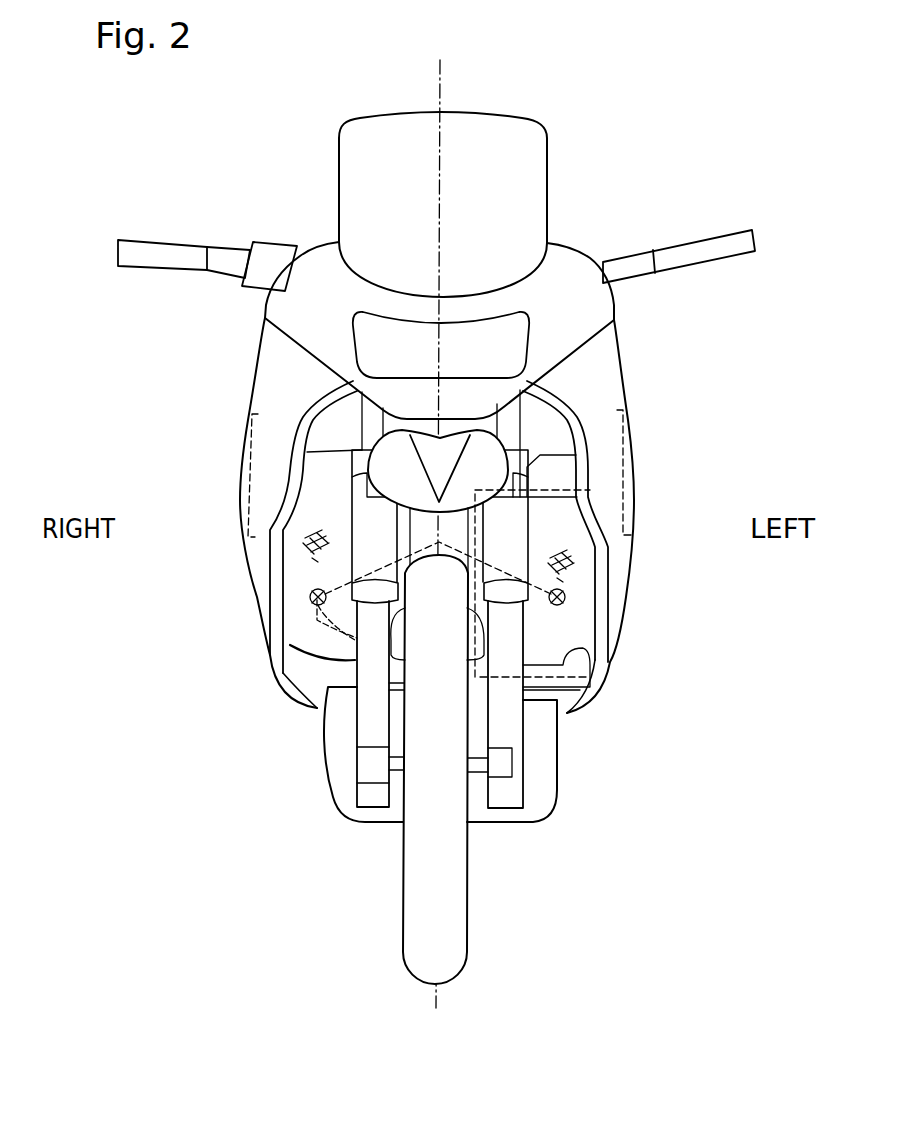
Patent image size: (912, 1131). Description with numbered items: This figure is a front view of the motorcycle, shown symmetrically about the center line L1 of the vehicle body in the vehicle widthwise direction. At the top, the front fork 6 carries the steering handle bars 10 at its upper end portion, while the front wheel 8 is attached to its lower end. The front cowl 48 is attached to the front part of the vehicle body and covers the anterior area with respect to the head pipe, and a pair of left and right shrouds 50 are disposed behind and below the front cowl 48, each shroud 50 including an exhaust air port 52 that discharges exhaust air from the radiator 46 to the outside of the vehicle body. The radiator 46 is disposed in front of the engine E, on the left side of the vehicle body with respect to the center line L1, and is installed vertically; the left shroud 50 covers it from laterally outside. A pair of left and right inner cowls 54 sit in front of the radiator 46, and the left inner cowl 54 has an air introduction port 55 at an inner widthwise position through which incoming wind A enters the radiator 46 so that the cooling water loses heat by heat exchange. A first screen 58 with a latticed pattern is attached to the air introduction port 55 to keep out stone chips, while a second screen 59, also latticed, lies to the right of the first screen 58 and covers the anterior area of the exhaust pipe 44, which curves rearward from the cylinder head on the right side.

The center line L1 is at (446, 80).
The front cowl 48 is at (599, 306).
The steering handle bars 10 is at (184, 243).
The shrouds 50 is at (257, 379).
The front fork 6 is at (370, 666).
The inner cowls 54 is at (320, 468).
The exhaust air port 52 is at (243, 474).
The radiator 46 is at (596, 506).
The front wheel 8 is at (468, 888).
The engine E is at (571, 763).
The air introduction port 55 is at (583, 651).
The exhaust pipe 44 is at (317, 620).
The incoming wind A is at (309, 597).
The second screen 59 is at (302, 549).
The first screen 58 is at (577, 561).